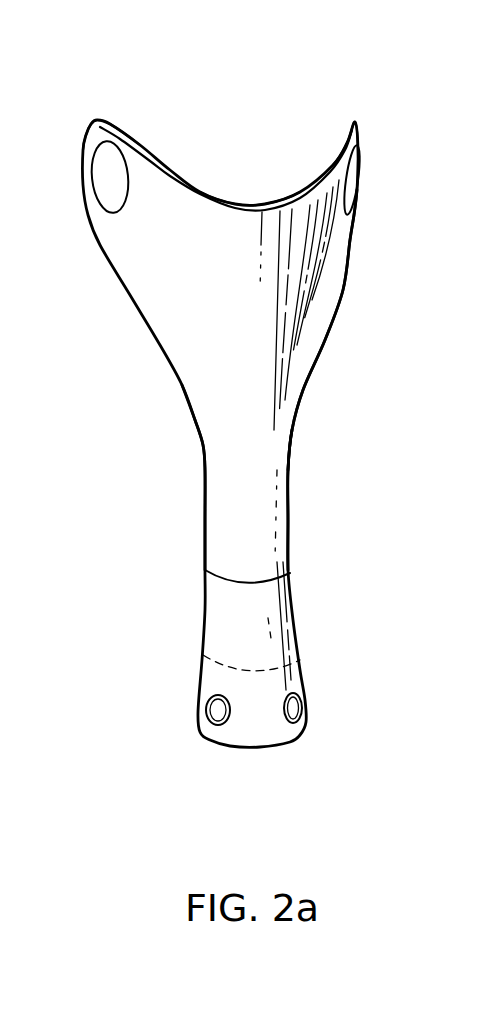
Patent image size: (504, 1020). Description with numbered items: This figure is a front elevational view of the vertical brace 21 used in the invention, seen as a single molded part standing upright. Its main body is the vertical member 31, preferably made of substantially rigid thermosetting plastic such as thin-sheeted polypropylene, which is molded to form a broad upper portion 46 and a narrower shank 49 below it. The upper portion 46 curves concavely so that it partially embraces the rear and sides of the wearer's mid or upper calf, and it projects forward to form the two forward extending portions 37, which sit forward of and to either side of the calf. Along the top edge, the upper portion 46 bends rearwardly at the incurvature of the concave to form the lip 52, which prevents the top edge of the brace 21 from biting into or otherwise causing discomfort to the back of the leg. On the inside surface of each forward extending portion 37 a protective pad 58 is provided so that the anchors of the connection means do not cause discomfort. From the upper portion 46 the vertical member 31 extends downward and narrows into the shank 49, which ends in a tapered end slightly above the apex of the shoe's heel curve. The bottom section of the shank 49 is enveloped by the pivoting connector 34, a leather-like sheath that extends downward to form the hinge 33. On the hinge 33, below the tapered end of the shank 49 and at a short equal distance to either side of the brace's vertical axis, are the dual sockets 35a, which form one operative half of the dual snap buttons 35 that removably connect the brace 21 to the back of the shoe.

The brace 21 is at (334, 367).
The vertical member 31 is at (297, 429).
The hinge 33 is at (307, 677).
The pivoting connector 34 is at (302, 612).
The dual snap buttons 35 is at (314, 703).
The dual sockets 35a is at (283, 718).
The forward extending portions 37 is at (93, 120).
The upper portion 46 is at (352, 284).
The shank 49 is at (297, 494).
The lip 52 is at (247, 204).
The protective pads 58 is at (113, 173).